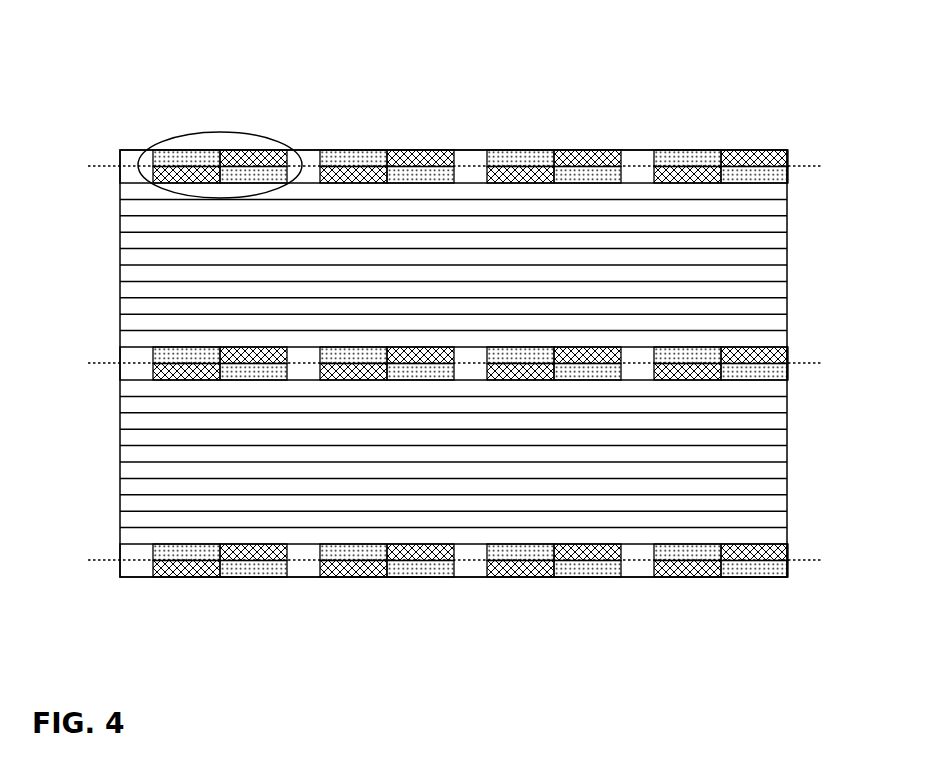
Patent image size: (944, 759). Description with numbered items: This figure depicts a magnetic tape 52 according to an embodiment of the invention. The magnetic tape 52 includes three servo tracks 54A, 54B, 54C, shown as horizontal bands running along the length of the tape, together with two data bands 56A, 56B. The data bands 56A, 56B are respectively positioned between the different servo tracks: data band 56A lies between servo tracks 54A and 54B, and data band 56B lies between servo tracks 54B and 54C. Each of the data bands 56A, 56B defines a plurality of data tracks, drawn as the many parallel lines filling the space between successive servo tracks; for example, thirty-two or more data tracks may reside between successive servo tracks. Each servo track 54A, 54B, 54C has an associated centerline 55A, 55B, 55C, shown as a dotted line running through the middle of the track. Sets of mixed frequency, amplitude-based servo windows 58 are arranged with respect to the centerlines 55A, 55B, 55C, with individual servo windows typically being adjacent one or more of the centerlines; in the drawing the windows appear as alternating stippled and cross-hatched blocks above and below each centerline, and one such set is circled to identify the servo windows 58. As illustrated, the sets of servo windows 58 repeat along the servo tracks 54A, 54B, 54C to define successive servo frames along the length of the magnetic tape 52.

The magnetic tape 52 is at (149, 46).
The servo track 54A is at (84, 166).
The servo track 54B is at (84, 363).
The servo track 54C is at (84, 560).
The centerline 55A is at (805, 163).
The centerline 55B is at (805, 360).
The centerline 55C is at (805, 557).
The data band 56A is at (810, 230).
The data band 56B is at (810, 428).
The mixed frequency, amplitude-based servo windows 58 is at (237, 133).